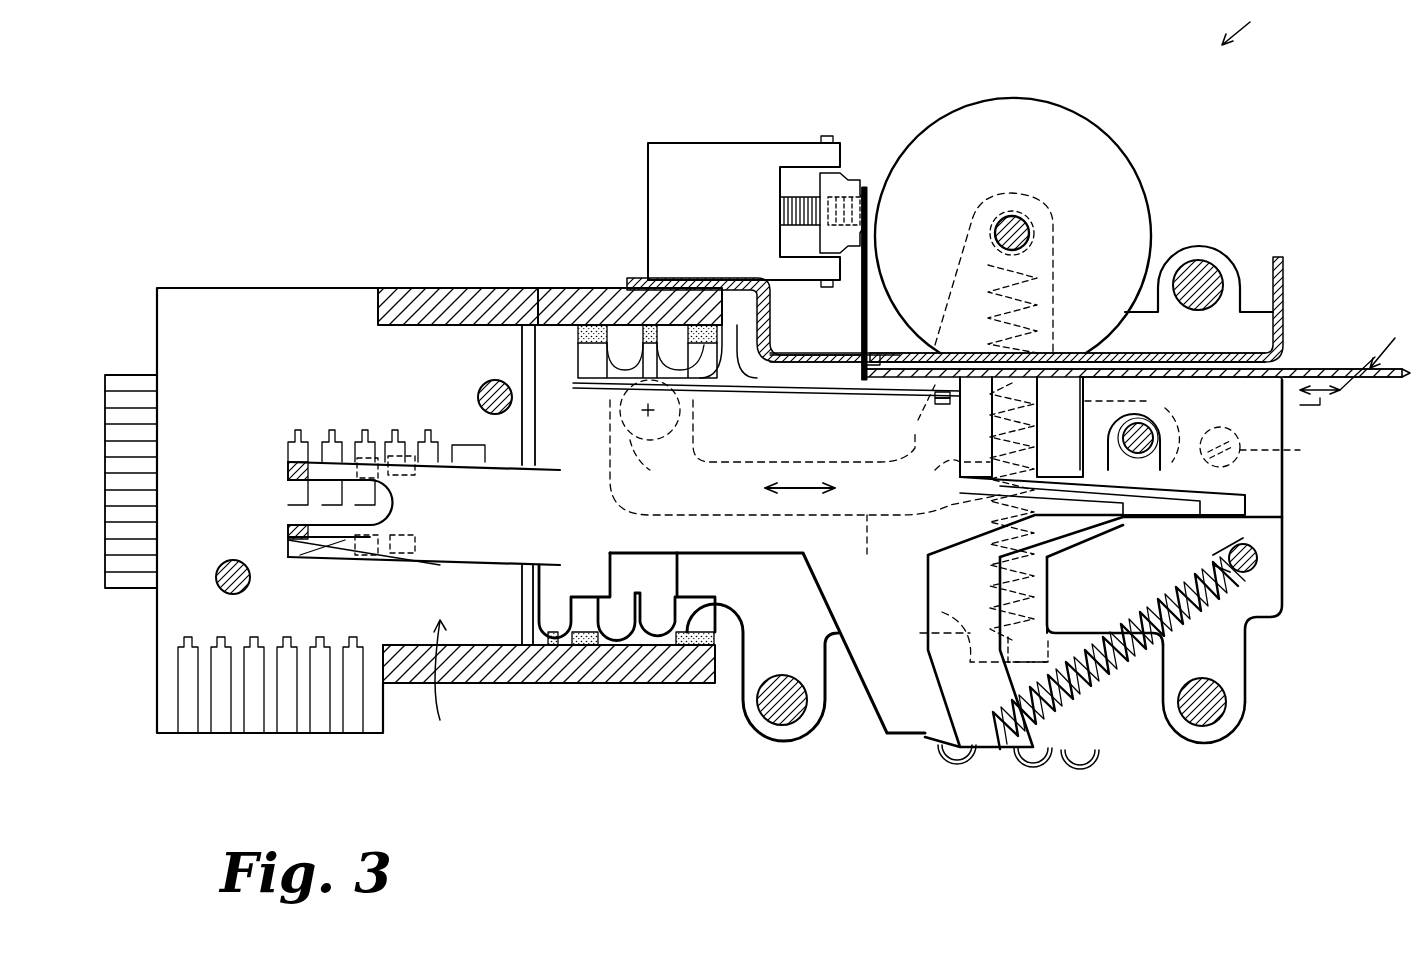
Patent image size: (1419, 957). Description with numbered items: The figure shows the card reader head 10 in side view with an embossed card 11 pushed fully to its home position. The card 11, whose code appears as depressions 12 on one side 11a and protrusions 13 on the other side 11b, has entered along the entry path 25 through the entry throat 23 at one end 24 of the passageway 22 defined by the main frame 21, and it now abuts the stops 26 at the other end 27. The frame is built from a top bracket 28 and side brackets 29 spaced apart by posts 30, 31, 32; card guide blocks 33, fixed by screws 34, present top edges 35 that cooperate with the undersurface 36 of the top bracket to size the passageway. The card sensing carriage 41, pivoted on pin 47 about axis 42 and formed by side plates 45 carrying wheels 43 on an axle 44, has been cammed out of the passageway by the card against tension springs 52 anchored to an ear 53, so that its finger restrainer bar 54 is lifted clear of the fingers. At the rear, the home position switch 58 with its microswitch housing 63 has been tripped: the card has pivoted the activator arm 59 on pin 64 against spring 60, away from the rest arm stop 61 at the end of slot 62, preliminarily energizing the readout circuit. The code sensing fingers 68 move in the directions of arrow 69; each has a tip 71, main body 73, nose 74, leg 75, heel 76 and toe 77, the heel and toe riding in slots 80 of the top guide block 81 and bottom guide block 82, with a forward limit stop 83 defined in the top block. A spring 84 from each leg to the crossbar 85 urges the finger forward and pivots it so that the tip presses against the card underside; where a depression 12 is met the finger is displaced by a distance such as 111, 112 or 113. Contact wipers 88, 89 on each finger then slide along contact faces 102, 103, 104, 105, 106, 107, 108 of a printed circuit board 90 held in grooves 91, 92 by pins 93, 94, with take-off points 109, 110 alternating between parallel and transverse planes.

The card reader head 10 is at (1252, 27).
The embossed card 11 is at (1391, 352).
The one side of the card 11a is at (1342, 395).
The other side of the card 11b is at (1345, 368).
The depressions 12 is at (920, 414).
The protrusions 13 is at (960, 352).
The main frame 21 is at (1277, 628).
The passageway 22 is at (1208, 358).
The entry throat 23 is at (1283, 366).
The one end of the passageway 24 is at (1290, 355).
The entry path 25 is at (1322, 413).
The stops 26 is at (880, 400).
The other end of the passageway 27 is at (902, 426).
The top bracket 28 is at (775, 352).
The side brackets 29 is at (1285, 533).
The post 30 is at (1205, 270).
The post 31 is at (1215, 718).
The post 32 is at (780, 730).
The card guide block 33 is at (1266, 468).
The screws 34 is at (1266, 447).
The top edges of the card guide blocks 35 is at (1200, 380).
The undersurface of the top bracket 36 is at (1165, 355).
The card sensing carriage 41 is at (1067, 236).
The pivot axis 42 is at (680, 430).
The wheels 43 is at (1150, 222).
The axle 44 is at (1016, 220).
The side plates of the carriage frame 45 is at (805, 488).
The pin 47 is at (651, 461).
The tension springs 52 is at (954, 471).
The ear 53 is at (983, 628).
The finger restrainer bar 54 is at (1150, 435).
The home position switch 58 is at (670, 214).
The activator arm 59 is at (868, 300).
The spring 60 is at (780, 212).
The rest arm stop 61 is at (892, 355).
The slot 62 is at (880, 355).
The microswitch housing 63 is at (706, 165).
The pin 64 is at (828, 135).
The code sensing fingers 68 is at (791, 549).
The direction arrow 69 is at (820, 478).
The code sensing tip 71 is at (960, 395).
The main body portion 73 is at (775, 400).
The nose portion 74 is at (1210, 515).
The leg portion 75 is at (935, 760).
The heel 76 is at (630, 350).
The toe 77 is at (640, 600).
The slots 80 is at (618, 286).
The top guide block 81 is at (508, 288).
The bottom guide block 82 is at (522, 685).
The forward limit stop 83 is at (735, 350).
The spring 84 is at (1120, 725).
The crossbar 85 is at (1260, 562).
The contact wiper 88 is at (295, 483).
The contact wiper 89 is at (318, 560).
The printed circuit boards 90 is at (451, 673).
The groove 91 is at (455, 288).
The groove 92 is at (508, 645).
The pin 93 is at (490, 382).
The pin 94 is at (222, 588).
The contact face 102 is at (490, 432).
The contact face 103 is at (300, 565).
The contact face 104 is at (432, 450).
The contact face 105 is at (400, 440).
The contact face 106 is at (362, 440).
The contact face 107 is at (330, 440).
The contact face 108 is at (290, 450).
The take-off point 109 is at (170, 742).
The take-off point 110 is at (107, 592).
The displacement distance 111 is at (1050, 588).
The displacement distance 112 is at (998, 582).
The displacement distance 113 is at (922, 573).